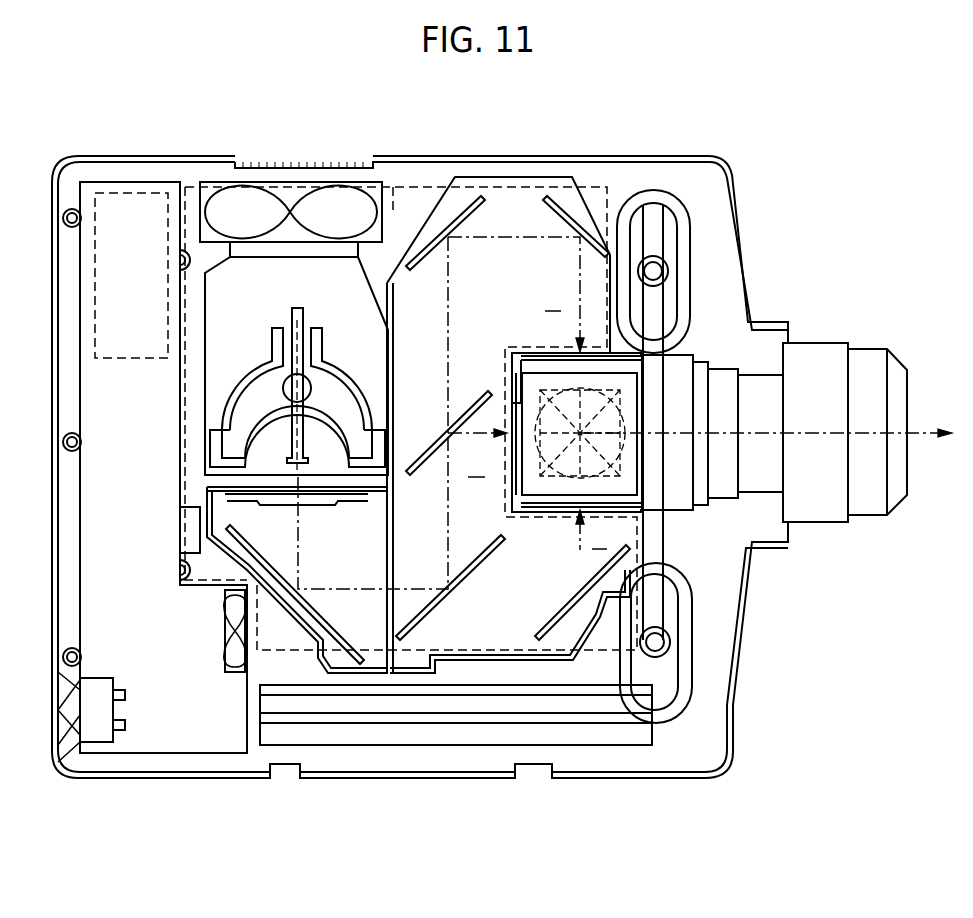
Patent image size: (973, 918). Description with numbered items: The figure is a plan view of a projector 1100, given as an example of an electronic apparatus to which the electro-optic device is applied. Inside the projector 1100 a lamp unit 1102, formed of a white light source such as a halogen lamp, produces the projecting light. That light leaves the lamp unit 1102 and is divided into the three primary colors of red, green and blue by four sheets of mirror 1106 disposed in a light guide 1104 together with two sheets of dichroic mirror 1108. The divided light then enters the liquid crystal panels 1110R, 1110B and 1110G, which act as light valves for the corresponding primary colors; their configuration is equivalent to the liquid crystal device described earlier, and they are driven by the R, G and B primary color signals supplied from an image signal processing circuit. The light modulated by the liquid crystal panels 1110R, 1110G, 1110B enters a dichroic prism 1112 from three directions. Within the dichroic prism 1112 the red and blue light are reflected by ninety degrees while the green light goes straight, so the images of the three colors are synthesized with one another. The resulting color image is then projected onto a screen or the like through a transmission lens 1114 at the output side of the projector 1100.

The projector 1100 is at (745, 160).
The lamp unit 1102 is at (342, 292).
The light guide 1104 is at (405, 212).
The mirror 1106 is at (553, 218).
The dichroic mirror 1108 is at (440, 447).
The liquid crystal panel 1110R is at (547, 350).
The liquid crystal panel 1110G is at (515, 403).
The liquid crystal panel 1110B is at (541, 505).
The dichroic prism 1112 is at (637, 495).
The transmission lens 1114 is at (876, 356).